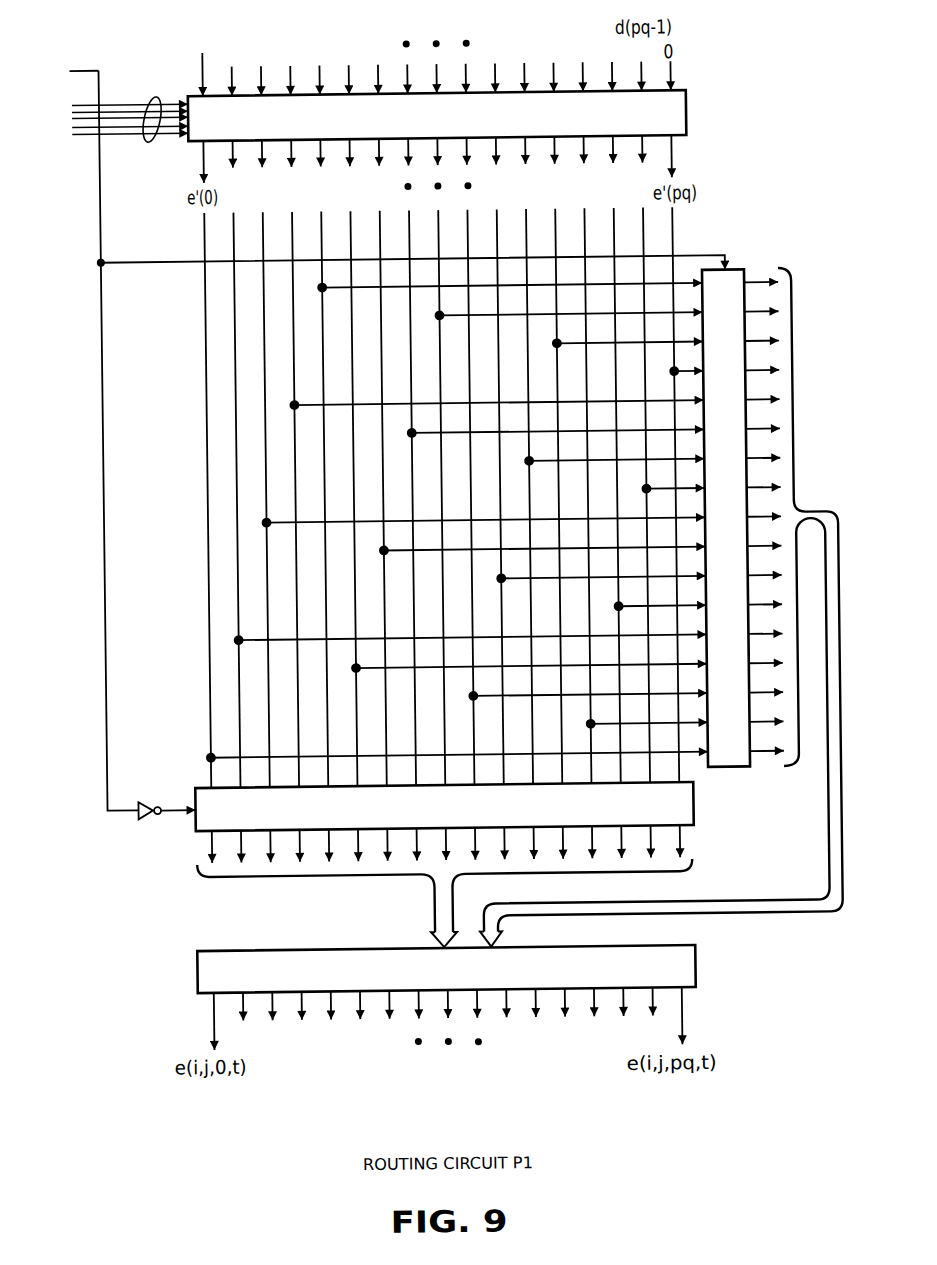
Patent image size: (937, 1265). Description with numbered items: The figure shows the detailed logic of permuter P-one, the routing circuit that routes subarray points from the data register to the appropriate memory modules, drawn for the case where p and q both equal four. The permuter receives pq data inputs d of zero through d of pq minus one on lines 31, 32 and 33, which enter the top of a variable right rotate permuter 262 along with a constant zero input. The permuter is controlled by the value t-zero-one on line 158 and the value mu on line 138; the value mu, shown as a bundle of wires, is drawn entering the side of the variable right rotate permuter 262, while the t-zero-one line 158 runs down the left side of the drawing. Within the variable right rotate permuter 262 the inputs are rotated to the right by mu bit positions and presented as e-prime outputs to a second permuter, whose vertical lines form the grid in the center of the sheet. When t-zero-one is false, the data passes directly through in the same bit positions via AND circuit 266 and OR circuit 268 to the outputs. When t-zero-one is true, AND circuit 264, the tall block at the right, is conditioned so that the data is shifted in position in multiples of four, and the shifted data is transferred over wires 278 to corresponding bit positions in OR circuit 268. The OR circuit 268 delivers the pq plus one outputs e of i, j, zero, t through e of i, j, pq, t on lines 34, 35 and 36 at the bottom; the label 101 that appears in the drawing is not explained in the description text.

The control signal line 101 is at (71, 68).
The line carrying t01 158 is at (106, 76).
The line carrying mu 138 is at (152, 138).
The data input line 31 is at (207, 65).
The data input line 32 is at (239, 72).
The data input line 33 is at (647, 59).
The variable right rotate permuter 262 is at (692, 113).
The AND circuit 264 is at (735, 773).
The AND circuit 266 is at (690, 821).
The OR circuit 268 is at (438, 998).
The wires 278 is at (824, 880).
The output line 34 is at (209, 1032).
The output line 35 is at (238, 1008).
The output line 36 is at (679, 1038).